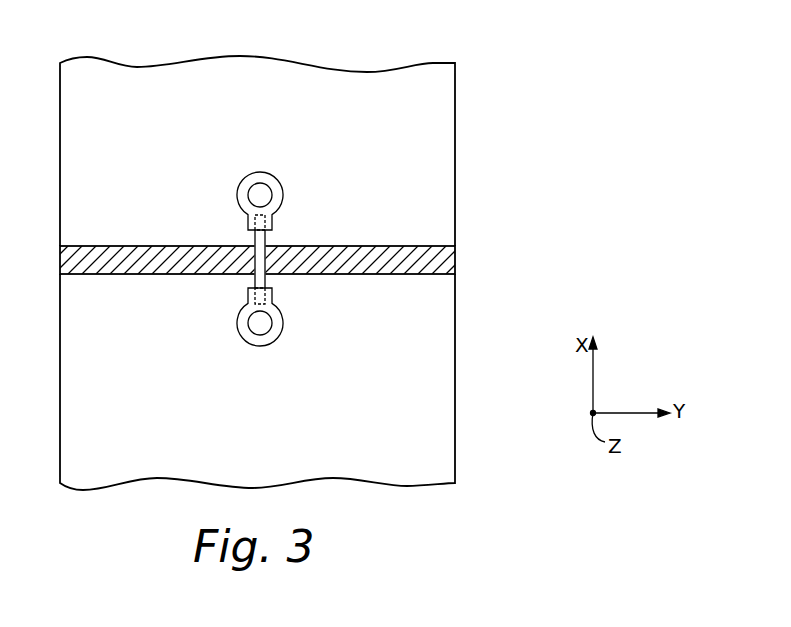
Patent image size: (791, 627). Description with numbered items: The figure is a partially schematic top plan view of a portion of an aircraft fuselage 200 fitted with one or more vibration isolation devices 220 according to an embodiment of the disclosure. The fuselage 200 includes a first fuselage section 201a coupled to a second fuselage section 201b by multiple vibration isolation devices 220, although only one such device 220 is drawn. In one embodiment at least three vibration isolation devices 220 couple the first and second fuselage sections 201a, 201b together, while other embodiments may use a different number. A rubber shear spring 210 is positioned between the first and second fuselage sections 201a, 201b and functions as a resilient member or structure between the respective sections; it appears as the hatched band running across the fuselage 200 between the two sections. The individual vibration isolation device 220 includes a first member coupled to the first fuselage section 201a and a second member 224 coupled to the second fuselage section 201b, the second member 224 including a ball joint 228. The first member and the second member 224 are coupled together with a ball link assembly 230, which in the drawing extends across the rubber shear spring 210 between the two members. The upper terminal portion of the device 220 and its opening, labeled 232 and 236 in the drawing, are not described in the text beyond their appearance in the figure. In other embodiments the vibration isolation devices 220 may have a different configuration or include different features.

The aircraft fuselage 200 is at (510, 70).
The first fuselage section 201a is at (455, 152).
The second fuselage section 201b is at (455, 415).
The rubber shear spring 210 is at (455, 258).
The vibration isolation device 220 is at (288, 162).
The second member 224 is at (275, 342).
The ball joint 228 is at (272, 317).
The ball link assembly 230 is at (252, 288).
The first ring terminal 232 is at (242, 178).
The first terminal aperture 236 is at (248, 197).